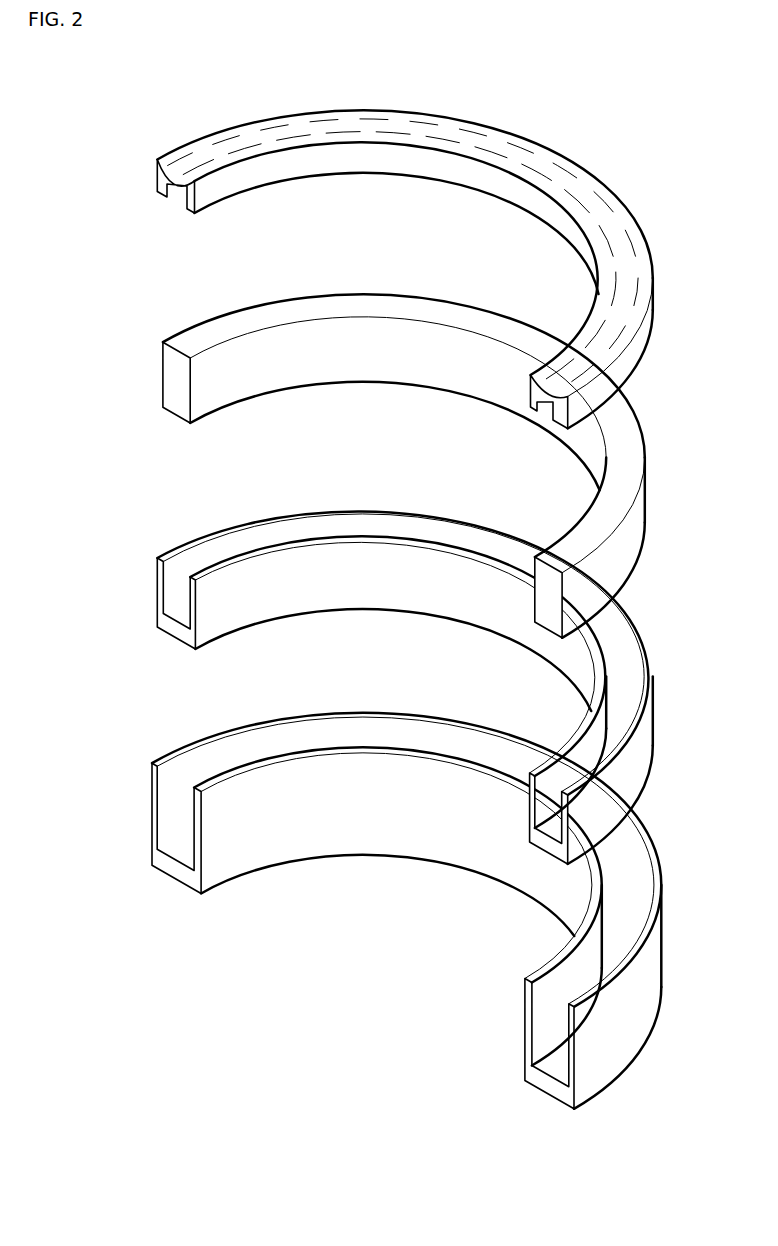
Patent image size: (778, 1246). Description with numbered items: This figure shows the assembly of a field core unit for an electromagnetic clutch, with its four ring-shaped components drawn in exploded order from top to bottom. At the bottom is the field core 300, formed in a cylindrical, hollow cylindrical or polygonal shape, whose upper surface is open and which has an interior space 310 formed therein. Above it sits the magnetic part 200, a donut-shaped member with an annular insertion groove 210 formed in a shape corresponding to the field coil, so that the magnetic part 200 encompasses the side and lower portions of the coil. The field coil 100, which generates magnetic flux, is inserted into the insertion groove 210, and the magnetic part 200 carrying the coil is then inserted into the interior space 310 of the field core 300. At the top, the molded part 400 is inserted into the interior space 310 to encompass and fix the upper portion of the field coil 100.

The field coil 100 is at (213, 330).
The magnetic part 200 is at (203, 540).
The insertion groove 210 is at (184, 598).
The field core 300 is at (192, 748).
The interior space 310 is at (183, 821).
The molded part 400 is at (203, 146).